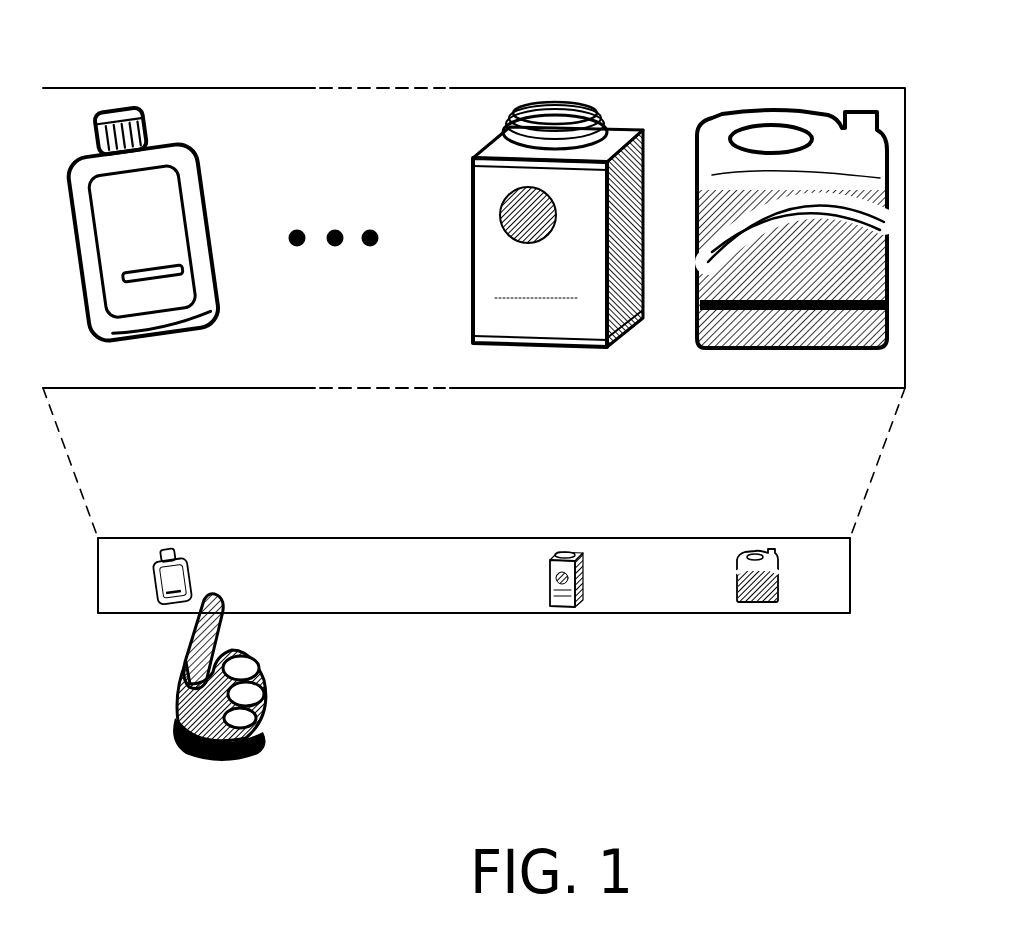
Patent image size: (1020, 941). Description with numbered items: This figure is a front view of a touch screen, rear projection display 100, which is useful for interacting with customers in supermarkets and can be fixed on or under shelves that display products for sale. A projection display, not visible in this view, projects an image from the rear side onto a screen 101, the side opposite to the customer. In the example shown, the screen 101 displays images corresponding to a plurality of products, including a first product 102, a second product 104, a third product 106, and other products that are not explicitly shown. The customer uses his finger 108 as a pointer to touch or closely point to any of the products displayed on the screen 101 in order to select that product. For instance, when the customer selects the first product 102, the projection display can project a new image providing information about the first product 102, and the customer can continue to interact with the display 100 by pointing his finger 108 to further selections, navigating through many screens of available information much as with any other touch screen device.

The touch screen, rear projection display 100 is at (257, 537).
The screen 101 is at (398, 595).
The first product 102 is at (157, 113).
The second product 104 is at (577, 115).
The third product 106 is at (793, 115).
The finger 108 is at (272, 671).